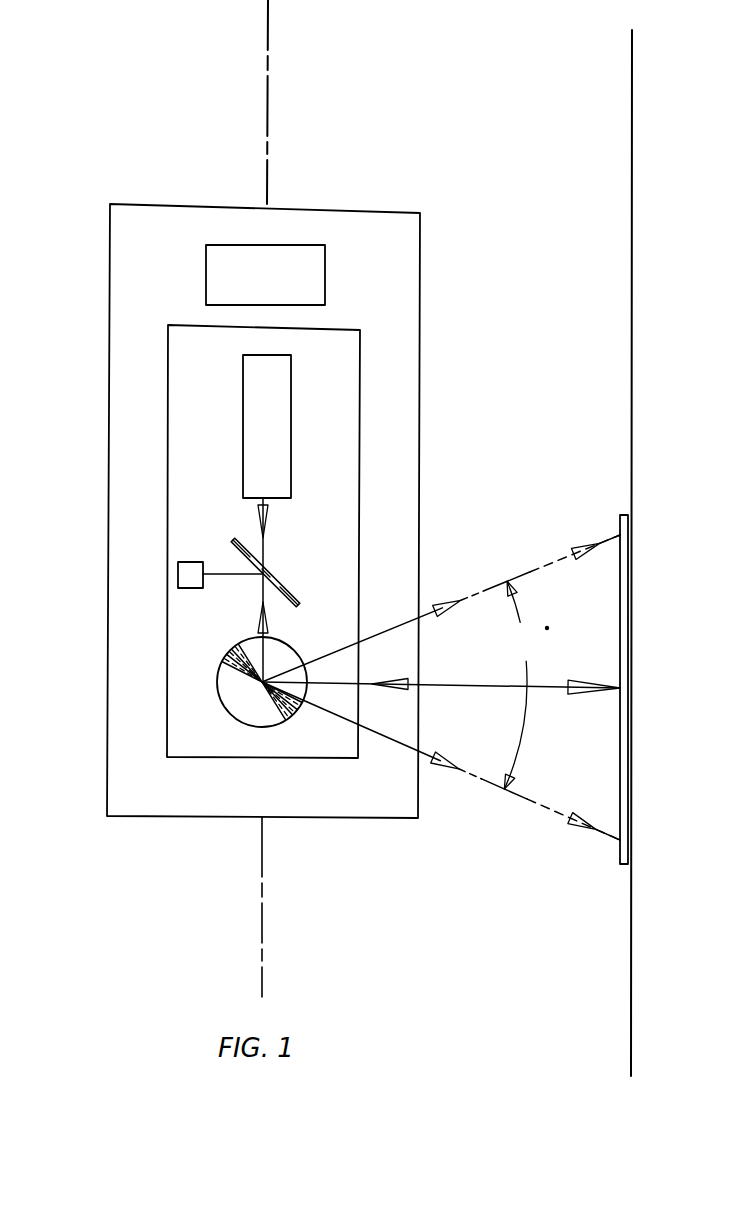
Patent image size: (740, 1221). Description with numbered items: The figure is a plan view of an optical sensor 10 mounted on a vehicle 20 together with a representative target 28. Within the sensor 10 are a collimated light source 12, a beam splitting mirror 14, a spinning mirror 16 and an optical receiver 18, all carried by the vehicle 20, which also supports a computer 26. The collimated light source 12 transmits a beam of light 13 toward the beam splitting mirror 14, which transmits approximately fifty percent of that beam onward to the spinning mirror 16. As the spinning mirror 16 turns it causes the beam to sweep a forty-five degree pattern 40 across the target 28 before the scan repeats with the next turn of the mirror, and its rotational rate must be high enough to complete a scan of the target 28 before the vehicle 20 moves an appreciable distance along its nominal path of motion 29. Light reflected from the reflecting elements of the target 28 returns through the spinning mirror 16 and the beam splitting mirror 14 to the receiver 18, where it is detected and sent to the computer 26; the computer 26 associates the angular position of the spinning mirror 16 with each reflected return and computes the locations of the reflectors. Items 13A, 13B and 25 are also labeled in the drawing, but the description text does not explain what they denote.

The sensor 10 is at (360, 513).
The collimated light source 12 is at (291, 412).
The beam of light 13 is at (267, 555).
The beam splitter first surface 13A is at (258, 593).
The beam splitter second surface 13B is at (230, 572).
The beam splitting mirror 14 is at (288, 597).
The spinning mirror 16 is at (227, 651).
The optical receiver 18 is at (177, 562).
The vehicle 20 is at (420, 318).
The wall / target surface 25 is at (630, 980).
The computer 26 is at (325, 290).
The target 28 is at (620, 852).
The nominal path of motion 29 is at (262, 930).
The 45 degree pattern 40 is at (519, 612).